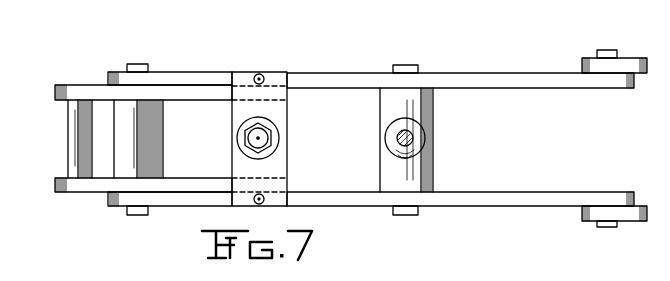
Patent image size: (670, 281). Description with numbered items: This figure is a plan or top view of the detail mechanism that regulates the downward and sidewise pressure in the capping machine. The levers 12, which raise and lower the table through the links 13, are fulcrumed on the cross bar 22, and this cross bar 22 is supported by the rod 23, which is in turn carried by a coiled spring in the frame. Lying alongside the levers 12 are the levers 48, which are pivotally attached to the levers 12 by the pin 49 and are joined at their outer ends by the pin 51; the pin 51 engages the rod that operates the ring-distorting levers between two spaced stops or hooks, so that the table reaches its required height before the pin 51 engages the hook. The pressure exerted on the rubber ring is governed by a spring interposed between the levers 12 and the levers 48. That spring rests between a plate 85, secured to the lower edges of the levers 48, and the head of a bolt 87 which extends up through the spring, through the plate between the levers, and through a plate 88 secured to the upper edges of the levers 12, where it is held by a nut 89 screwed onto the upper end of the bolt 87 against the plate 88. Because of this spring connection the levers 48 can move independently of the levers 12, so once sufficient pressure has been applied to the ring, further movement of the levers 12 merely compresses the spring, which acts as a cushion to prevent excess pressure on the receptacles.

The levers 12 is at (503, 192).
The links 13 is at (622, 233).
The cross bar 22 is at (386, 105).
The rod 23 is at (423, 136).
The levers 48 is at (197, 98).
The pin 49 is at (137, 66).
The pin 51 is at (68, 138).
The plate 85 is at (289, 156).
The bolt 87 is at (260, 140).
The plate 88 is at (278, 110).
The nut 89 is at (237, 142).